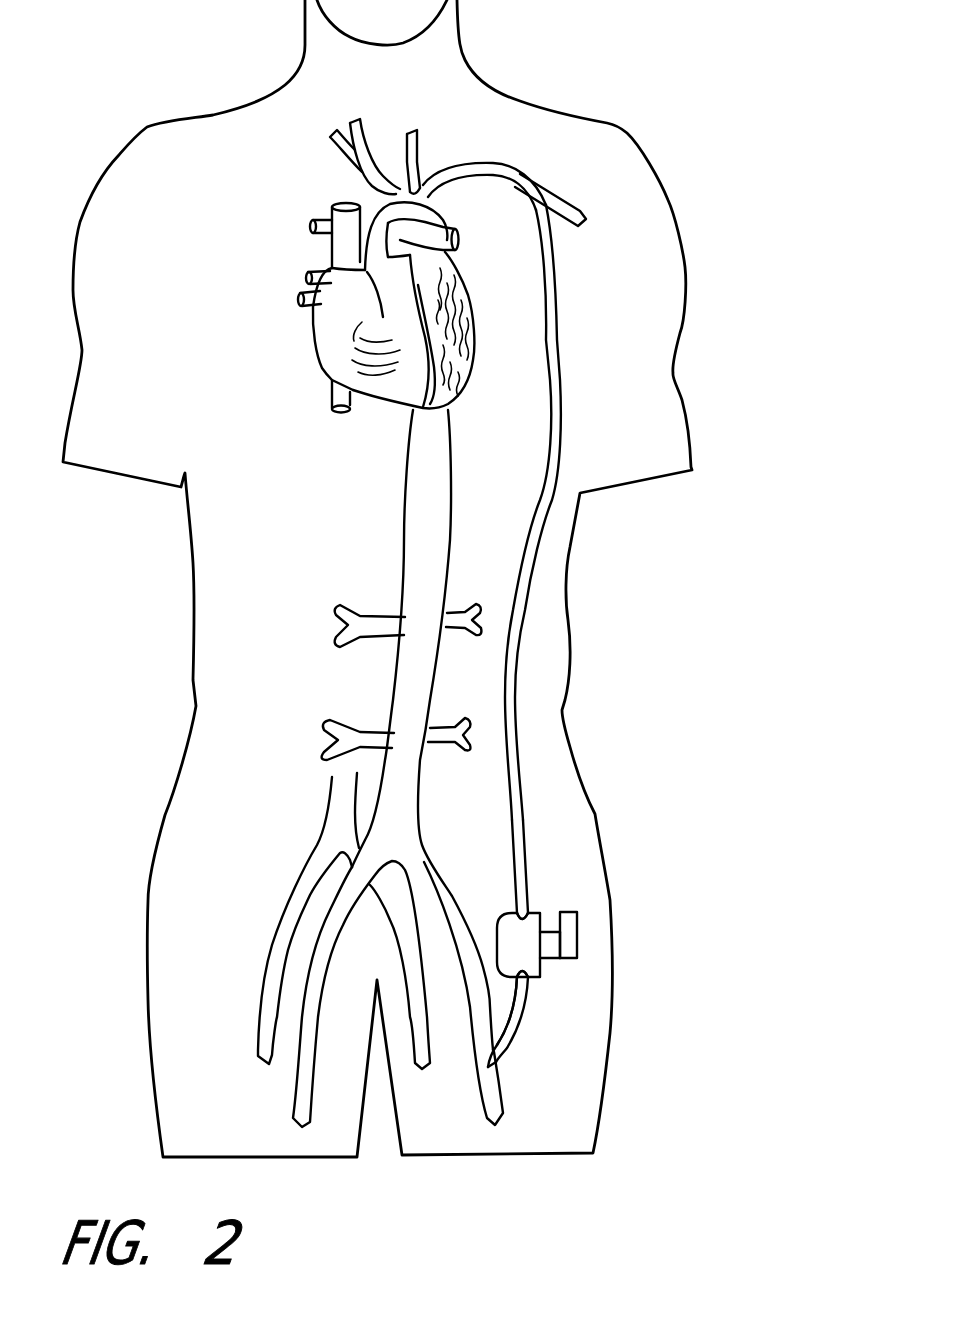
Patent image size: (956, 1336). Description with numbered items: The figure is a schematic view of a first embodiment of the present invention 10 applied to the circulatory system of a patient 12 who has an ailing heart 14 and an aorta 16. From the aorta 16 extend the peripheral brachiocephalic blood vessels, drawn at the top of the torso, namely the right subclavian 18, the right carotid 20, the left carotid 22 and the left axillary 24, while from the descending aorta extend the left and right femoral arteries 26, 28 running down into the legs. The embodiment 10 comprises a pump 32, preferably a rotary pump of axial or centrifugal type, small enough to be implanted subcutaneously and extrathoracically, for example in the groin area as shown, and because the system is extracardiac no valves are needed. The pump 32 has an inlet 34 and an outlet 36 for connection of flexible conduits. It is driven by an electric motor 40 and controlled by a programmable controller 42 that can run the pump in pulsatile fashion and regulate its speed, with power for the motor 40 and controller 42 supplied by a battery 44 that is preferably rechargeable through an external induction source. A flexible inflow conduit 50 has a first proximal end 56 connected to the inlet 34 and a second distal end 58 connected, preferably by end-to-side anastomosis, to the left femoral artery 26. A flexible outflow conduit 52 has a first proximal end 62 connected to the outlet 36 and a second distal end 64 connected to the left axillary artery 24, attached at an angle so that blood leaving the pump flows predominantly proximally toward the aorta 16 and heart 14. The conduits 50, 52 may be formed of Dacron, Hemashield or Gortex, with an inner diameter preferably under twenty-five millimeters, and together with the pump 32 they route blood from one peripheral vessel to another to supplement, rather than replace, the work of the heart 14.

The first embodiment of the present invention 10 is at (643, 648).
The patient 12 is at (147, 120).
The heart 14 is at (313, 334).
The aorta 16 is at (403, 503).
The right subclavian 18 is at (337, 143).
The right carotid 20 is at (350, 133).
The left carotid 22 is at (423, 135).
The left axillary 24 is at (567, 198).
The left femoral artery 26 is at (507, 1100).
The right femoral artery 28 is at (293, 1077).
The pump 32 is at (497, 927).
The inlet 34 is at (523, 968).
The outlet 36 is at (533, 920).
The electric motor 40 is at (540, 957).
The programmable controller 42 is at (578, 922).
The battery 44 is at (549, 947).
The inflow conduit 50 is at (515, 1040).
The outflow conduit 52 is at (513, 695).
The first proximal end 56 is at (523, 988).
The second distal end 58 is at (487, 1060).
The first proximal end 62 is at (527, 857).
The second distal end 64 is at (520, 180).